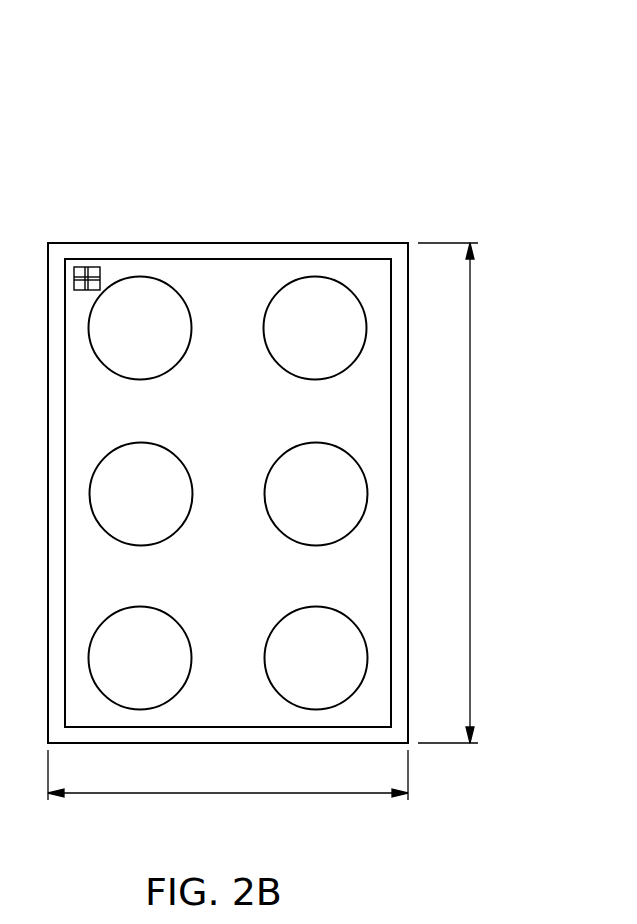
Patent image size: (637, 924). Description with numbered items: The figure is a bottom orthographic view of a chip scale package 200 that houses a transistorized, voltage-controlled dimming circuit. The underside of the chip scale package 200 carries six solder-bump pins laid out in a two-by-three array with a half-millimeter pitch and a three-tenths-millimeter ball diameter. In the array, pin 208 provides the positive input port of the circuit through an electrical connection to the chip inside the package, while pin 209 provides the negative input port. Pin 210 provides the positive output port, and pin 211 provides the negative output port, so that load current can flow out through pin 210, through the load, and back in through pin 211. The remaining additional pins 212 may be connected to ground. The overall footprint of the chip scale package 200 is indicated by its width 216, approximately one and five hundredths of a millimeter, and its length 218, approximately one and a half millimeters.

The chip scale package 200 is at (256, 136).
The pin 208 is at (140, 277).
The pin 210 is at (315, 277).
The additional pins 212 is at (141, 443).
The pin 209 is at (140, 607).
The pin 211 is at (316, 607).
The width 216 is at (230, 795).
The length 218 is at (470, 492).